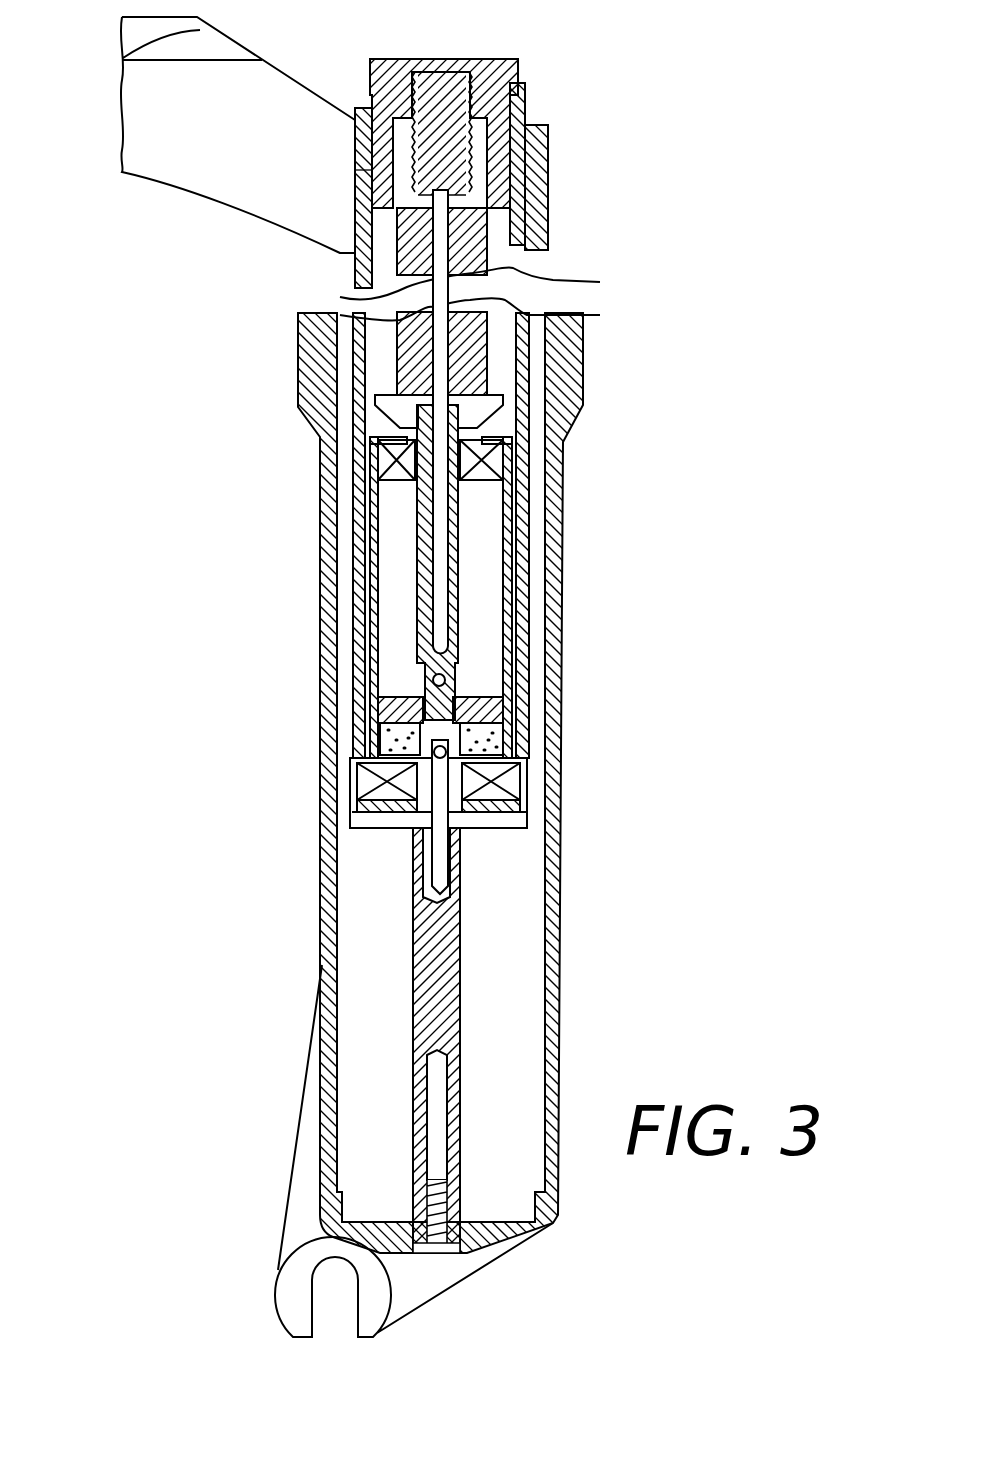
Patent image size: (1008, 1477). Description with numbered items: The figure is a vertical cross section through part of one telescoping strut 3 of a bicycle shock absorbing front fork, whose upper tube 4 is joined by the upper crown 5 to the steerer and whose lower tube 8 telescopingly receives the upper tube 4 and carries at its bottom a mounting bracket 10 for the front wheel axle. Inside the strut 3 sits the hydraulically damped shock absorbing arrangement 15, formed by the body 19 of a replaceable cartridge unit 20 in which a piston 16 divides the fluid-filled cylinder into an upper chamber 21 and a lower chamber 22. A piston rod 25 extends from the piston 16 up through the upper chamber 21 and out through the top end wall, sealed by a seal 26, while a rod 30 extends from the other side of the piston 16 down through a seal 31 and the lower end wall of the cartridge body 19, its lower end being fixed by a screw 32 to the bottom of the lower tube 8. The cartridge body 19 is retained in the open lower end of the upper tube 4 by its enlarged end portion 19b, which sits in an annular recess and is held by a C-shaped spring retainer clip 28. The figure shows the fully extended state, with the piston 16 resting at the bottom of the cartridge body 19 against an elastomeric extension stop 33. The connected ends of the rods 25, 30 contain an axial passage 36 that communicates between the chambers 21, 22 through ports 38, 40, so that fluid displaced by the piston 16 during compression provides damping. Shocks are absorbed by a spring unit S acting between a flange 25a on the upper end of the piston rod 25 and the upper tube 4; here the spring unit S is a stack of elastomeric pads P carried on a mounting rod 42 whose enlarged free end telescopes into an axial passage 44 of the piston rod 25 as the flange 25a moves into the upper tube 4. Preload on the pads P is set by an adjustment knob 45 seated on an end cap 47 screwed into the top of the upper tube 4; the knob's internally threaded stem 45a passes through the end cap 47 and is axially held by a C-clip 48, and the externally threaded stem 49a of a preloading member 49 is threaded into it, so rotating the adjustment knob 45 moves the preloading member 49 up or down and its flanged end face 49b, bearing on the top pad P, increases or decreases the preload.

The telescoping strut 3 is at (308, 432).
The upper tube 4 is at (515, 292).
The upper crown 5 is at (172, 131).
The lower tube 8 is at (555, 697).
The mounting bracket 10 is at (300, 1300).
The hydraulically damped shock absorbing arrangement 15 is at (401, 846).
The piston 16 is at (478, 692).
The cartridge body 19 is at (367, 652).
The enlarged end portion 19b is at (515, 770).
The replaceable cartridge unit 20 is at (365, 545).
The upper chamber 21 is at (408, 604).
The lower chamber 22 is at (375, 732).
The piston rod 25 is at (490, 548).
The flange 25a is at (493, 403).
The seal 26 is at (505, 458).
The spring retainer clip 28 is at (527, 828).
The rod 30 is at (465, 953).
The seal 31 is at (377, 827).
The screw 32 is at (440, 1247).
The elastomeric extension stop 33 is at (373, 755).
The axial passage 36 is at (375, 703).
The port 38 is at (450, 840).
The port 40 is at (432, 690).
The mounting rod 42 is at (365, 418).
The axial passage 44 is at (438, 497).
The adjustment knob 45 is at (480, 62).
The internally threaded stem 45a is at (357, 133).
The end cap 47 is at (525, 95).
The C-clip 48 is at (532, 117).
The preloading member 49 is at (547, 213).
The externally threaded stem 49a is at (355, 126).
The flanged end face 49b is at (355, 177).
The elastomeric pad P is at (547, 233).
The spring unit S is at (360, 300).